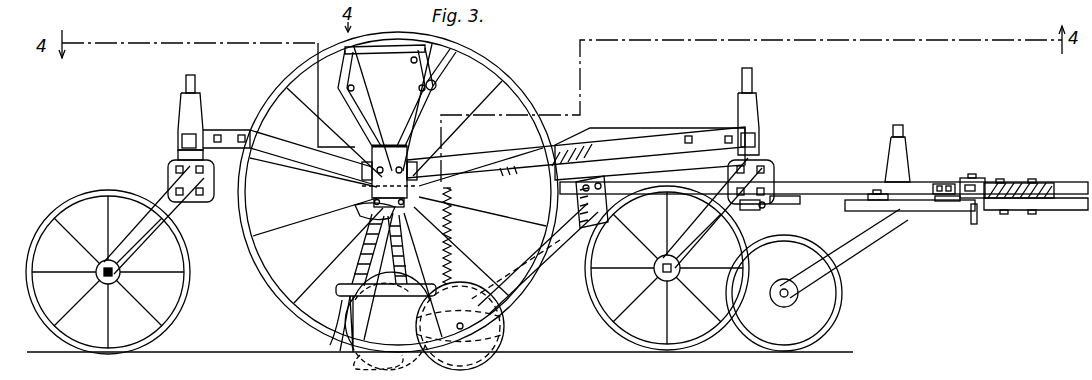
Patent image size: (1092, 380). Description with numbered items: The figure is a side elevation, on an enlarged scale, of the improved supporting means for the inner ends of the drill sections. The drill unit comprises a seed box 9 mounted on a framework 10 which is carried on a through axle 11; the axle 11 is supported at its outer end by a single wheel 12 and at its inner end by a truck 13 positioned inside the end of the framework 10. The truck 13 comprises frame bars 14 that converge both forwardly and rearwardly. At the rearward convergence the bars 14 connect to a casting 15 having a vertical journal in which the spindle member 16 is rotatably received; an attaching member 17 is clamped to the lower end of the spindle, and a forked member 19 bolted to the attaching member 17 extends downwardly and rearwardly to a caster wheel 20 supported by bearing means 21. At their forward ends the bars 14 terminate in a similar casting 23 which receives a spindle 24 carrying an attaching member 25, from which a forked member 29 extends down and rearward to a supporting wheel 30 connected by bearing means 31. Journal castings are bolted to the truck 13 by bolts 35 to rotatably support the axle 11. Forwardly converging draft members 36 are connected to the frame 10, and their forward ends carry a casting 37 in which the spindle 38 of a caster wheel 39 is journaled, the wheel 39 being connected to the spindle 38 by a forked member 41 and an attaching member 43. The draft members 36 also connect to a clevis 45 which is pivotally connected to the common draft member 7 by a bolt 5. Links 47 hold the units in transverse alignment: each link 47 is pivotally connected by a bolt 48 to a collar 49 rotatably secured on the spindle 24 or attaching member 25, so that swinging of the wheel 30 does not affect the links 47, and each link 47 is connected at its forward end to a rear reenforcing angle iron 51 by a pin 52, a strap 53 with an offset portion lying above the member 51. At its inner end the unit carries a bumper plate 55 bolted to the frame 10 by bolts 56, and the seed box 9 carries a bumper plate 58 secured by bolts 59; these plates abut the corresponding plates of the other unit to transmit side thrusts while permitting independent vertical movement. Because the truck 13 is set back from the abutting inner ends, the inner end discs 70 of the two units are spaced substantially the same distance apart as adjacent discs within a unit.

The bolt 5 is at (970, 176).
The common draft member 7 is at (1054, 183).
The seed box 9 is at (356, 100).
The framework 10 is at (470, 165).
The through axle 11 is at (352, 198).
The single wheel 12 is at (290, 78).
The truck 13 is at (622, 128).
The frame bars 14 is at (300, 165).
The casting 15 is at (181, 116).
The spindle member 16 is at (186, 83).
The attaching member 17 is at (170, 172).
The forked member 19 is at (142, 228).
The caster wheel 20 is at (88, 186).
The bearing means 21 is at (100, 276).
The casting 23 is at (759, 98).
The spindle 24 is at (752, 78).
The attaching member 25 is at (770, 176).
The forked member 29 is at (708, 226).
The supporting wheel 30 is at (604, 318).
The bearing means 31 is at (656, 272).
The bolts 35 is at (367, 225).
The draft members 36 is at (836, 174).
The casting 37 is at (905, 145).
The spindle 38 is at (903, 128).
The caster wheel 39 is at (838, 310).
The forked member 41 is at (840, 256).
The attaching member 43 is at (925, 212).
The clevis 45 is at (955, 184).
The links 47 is at (918, 205).
The bolt 48 is at (785, 204).
The collar 49 is at (758, 209).
The rear reenforcing angle iron 51 is at (1018, 212).
The pin 52 is at (980, 218).
The strap 53 is at (952, 204).
The bumper plate 55 is at (585, 222).
The bolts 56 is at (603, 190).
The bumper plate 58 is at (380, 146).
The bolts 59 is at (403, 168).
The inner end discs 70 is at (470, 285).